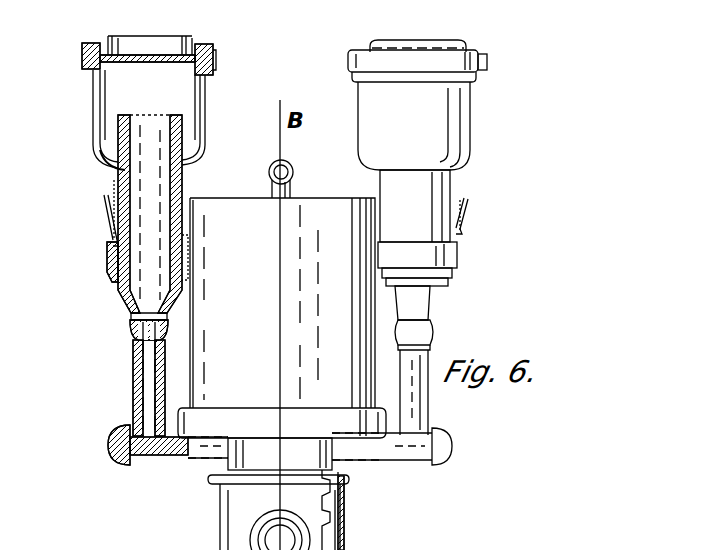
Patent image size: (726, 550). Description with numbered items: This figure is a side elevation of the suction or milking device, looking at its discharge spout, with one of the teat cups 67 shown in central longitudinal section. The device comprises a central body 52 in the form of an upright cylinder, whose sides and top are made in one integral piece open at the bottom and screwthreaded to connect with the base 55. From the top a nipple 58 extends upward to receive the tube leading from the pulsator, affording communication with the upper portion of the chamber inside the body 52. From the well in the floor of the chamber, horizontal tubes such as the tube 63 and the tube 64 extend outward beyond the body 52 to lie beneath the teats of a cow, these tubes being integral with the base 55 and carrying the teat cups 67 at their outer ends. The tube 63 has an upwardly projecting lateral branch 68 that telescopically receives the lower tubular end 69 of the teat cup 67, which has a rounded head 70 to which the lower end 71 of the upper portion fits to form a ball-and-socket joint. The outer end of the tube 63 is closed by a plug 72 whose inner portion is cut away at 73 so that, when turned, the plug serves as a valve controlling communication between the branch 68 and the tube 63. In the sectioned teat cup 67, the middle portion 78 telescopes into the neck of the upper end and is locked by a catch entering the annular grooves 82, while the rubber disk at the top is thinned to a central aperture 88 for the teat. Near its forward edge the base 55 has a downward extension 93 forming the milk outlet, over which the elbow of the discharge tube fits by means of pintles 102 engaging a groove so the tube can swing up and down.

The central body 52 is at (244, 192).
The base 55 is at (230, 455).
The nipple 58 is at (293, 176).
The tube 63 is at (190, 454).
The tube 64 is at (394, 448).
The teat cup 67 is at (455, 172).
The lateral branch 68 is at (136, 392).
The lower tubular end 69 is at (150, 355).
The rounded head 70 is at (132, 331).
The lower end of upper portion 71 is at (133, 318).
The plug 72 is at (114, 462).
The cut-away portion 73 is at (148, 440).
The middle portion 78 is at (118, 152).
The annular grooves 82 is at (184, 175).
The central aperture 88 is at (145, 58).
The downward extension 93 is at (250, 472).
The pintles 102 is at (355, 478).